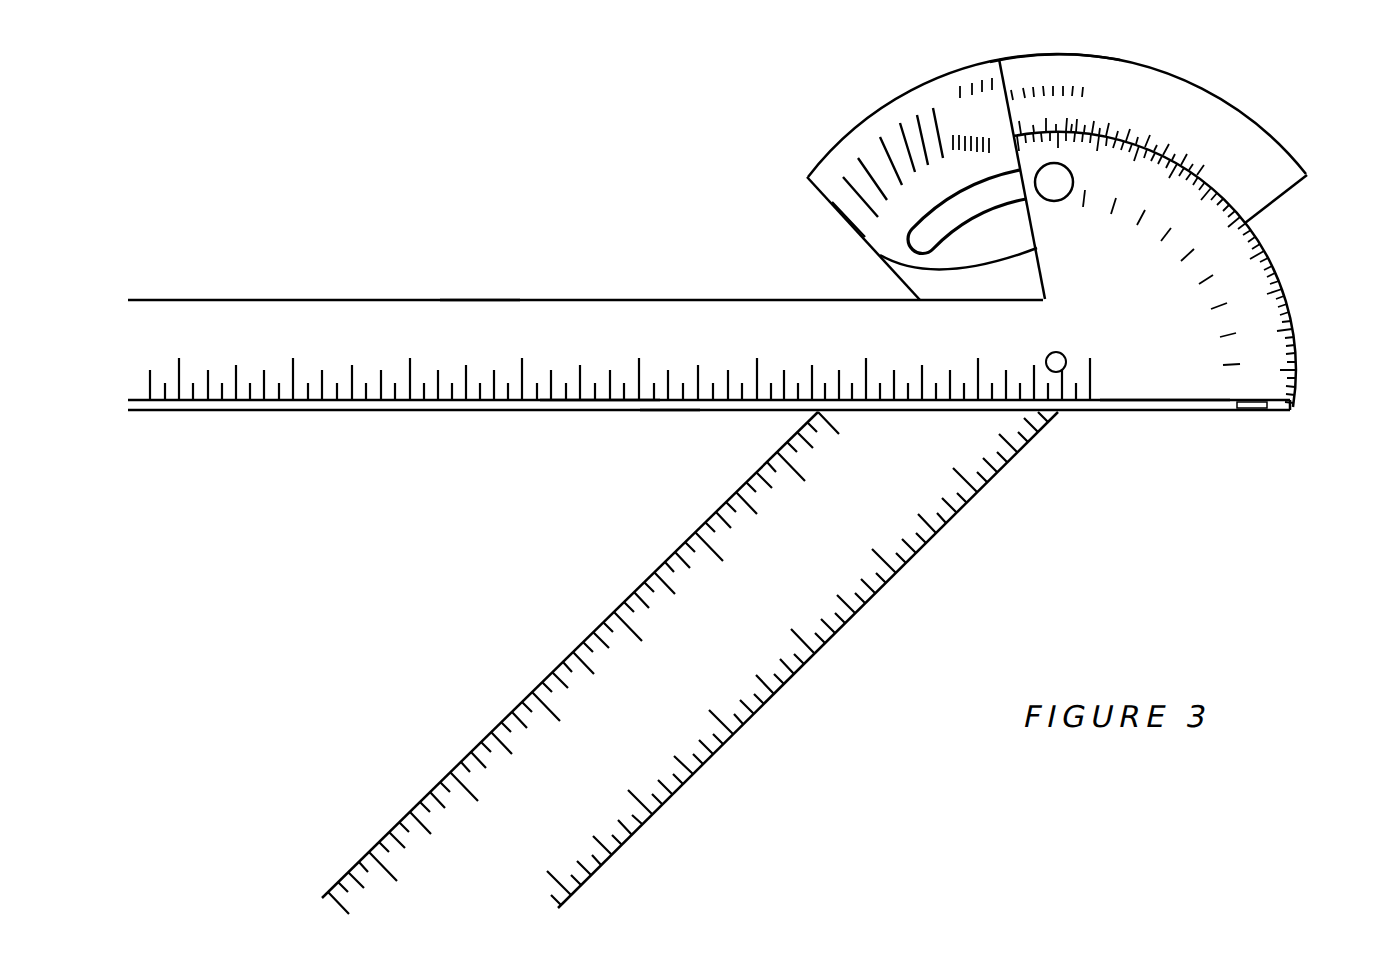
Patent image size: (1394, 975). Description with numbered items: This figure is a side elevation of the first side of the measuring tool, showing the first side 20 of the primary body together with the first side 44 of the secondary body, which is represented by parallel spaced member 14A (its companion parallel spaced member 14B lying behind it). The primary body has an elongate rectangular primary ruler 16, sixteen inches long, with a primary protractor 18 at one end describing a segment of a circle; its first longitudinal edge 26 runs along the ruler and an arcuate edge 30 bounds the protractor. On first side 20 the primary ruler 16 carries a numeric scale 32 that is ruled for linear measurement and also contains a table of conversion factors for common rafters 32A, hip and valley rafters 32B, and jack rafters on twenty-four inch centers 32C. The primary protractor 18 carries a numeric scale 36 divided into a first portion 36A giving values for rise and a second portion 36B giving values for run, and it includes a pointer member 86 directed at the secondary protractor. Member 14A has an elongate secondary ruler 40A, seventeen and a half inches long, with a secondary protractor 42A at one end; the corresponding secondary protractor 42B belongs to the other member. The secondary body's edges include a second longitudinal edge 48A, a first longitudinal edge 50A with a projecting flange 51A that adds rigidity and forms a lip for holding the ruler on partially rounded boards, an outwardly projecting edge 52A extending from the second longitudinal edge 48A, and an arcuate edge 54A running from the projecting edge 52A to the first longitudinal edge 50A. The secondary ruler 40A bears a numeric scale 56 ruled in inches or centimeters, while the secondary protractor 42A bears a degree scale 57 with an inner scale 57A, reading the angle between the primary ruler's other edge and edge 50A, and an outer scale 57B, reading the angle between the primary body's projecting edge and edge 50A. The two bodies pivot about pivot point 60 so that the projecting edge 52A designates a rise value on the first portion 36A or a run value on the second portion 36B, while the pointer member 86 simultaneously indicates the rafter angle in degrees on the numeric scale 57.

The parallel spaced member 14A is at (598, 405).
The parallel spaced member 14B is at (668, 402).
The primary ruler 16 is at (510, 777).
The primary protractor 18 is at (937, 80).
The first side 20 is at (870, 600).
The first longitudinal edge 26 is at (797, 673).
The arcuate edge 30 is at (1023, 45).
The numeric scale 32 is at (700, 655).
The common rafter conversion scale 32A is at (887, 415).
The hip and valley rafter conversion scale 32B is at (915, 425).
The jack rafter conversion scale 32C is at (935, 430).
The numeric scale 36 is at (1110, 83).
The first portion of numeric scale 36A is at (1223, 148).
The second portion of numeric scale 36B is at (853, 148).
The secondary ruler 40A is at (475, 327).
The secondary protractor 42A is at (1160, 377).
The secondary protractor 42B is at (1228, 410).
The first side 44 is at (387, 358).
The second longitudinal edge 48A is at (593, 300).
The first longitudinal edge 50A is at (183, 410).
The projecting flange 51A is at (257, 403).
The outwardly projecting edge 52A is at (880, 255).
The arcuate edge 54A is at (1260, 238).
The numeric scale 56 is at (400, 320).
The numeric scale 57 is at (1283, 277).
The inner scale 57A is at (1208, 372).
The outer scale 57B is at (1253, 378).
The pivot point 60 is at (1068, 373).
The pointer member 86 is at (1277, 202).